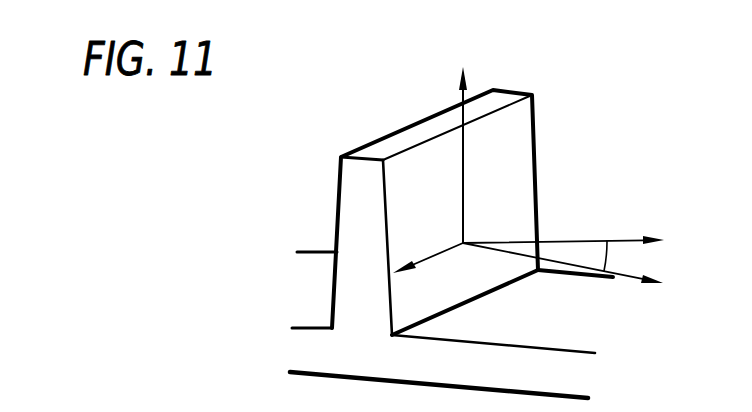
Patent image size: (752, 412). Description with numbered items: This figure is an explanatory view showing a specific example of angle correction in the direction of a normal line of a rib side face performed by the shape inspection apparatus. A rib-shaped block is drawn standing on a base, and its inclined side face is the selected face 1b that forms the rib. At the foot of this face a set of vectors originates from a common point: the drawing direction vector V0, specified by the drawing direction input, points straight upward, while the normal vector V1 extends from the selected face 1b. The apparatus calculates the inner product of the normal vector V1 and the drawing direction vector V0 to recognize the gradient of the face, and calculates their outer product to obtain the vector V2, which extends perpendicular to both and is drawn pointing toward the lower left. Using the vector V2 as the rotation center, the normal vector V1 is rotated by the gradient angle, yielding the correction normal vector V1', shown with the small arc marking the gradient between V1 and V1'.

The selected face 1b is at (508, 146).
The drawing direction vector V0 is at (464, 138).
The normal vector V1 is at (579, 270).
The correction normal vector V1' is at (581, 239).
The vector perpendicular to V1 and V0 V2 is at (428, 275).